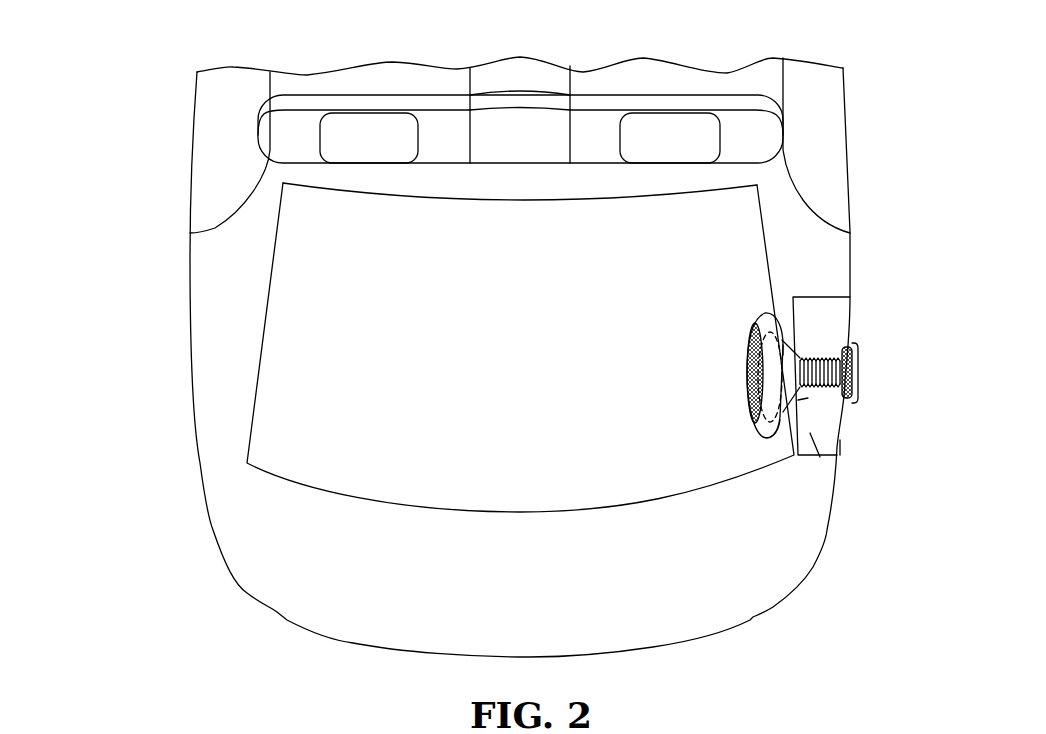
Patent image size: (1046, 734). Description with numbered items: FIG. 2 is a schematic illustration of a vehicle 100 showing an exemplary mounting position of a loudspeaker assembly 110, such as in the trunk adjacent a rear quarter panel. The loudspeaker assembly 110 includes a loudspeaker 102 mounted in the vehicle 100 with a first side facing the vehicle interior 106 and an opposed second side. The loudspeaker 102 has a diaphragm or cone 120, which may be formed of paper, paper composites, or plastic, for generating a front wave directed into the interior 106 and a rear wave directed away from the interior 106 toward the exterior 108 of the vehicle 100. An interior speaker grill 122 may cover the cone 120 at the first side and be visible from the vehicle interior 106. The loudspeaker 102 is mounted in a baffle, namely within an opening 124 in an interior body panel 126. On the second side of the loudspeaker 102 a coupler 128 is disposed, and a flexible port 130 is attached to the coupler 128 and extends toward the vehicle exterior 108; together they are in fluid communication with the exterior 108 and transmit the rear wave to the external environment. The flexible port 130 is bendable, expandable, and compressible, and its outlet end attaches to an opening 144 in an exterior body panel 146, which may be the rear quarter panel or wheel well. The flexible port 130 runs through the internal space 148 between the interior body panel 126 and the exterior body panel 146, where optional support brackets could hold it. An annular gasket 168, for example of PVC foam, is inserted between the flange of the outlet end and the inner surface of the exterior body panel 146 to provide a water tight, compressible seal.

The vehicle 100 is at (173, 107).
The loudspeaker 102 is at (717, 372).
The vehicle interior 106 is at (290, 365).
The vehicle exterior 108 is at (960, 203).
The loudspeaker assembly 110 is at (812, 402).
The cone 120 is at (753, 440).
The interior speaker grill 122 is at (752, 338).
The opening 124 is at (757, 318).
The interior body panel 126 is at (783, 440).
The coupler 128 is at (797, 345).
The flexible port 130 is at (832, 345).
The opening 144 is at (858, 348).
The exterior body panel 146 is at (848, 447).
The internal space 148 is at (813, 433).
The annular gasket 168 is at (856, 375).